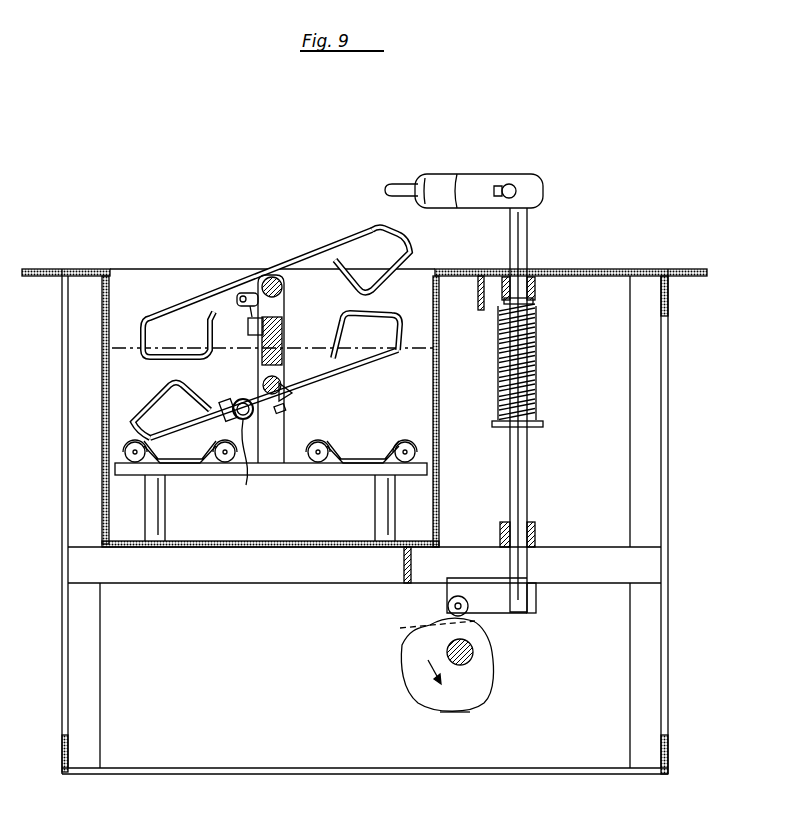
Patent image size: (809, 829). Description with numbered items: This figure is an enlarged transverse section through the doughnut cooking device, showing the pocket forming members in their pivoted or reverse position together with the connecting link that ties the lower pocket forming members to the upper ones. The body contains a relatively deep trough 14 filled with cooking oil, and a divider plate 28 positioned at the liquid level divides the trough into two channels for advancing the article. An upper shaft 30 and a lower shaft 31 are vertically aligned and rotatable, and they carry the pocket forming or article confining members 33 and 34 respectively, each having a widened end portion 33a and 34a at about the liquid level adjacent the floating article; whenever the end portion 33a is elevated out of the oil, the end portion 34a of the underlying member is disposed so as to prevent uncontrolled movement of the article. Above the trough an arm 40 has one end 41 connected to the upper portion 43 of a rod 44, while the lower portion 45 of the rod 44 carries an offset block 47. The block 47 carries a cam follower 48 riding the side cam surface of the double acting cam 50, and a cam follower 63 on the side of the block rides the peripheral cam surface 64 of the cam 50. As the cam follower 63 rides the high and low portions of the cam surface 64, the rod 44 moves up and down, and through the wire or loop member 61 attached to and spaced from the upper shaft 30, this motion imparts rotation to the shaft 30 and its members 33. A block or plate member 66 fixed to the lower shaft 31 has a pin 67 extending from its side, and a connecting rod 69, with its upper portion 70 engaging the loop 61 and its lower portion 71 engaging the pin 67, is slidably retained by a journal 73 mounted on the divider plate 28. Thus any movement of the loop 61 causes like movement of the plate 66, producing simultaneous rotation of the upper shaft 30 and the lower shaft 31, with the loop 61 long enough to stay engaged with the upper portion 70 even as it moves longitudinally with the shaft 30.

The trough 14 is at (115, 394).
The divider plate 28 is at (285, 340).
The upper shaft 30 is at (272, 277).
The lower shaft 31 is at (292, 397).
The upper pocket forming member 33 is at (302, 258).
The widened end portion of upper pocket forming member 33a is at (413, 249).
The lower pocket forming member 34 is at (330, 381).
The widened end portion of lower pocket forming member 34a is at (396, 352).
The arm 40 is at (405, 182).
The end of arm 41 is at (480, 180).
The upper portion of rod 43 is at (531, 225).
The rod 44 is at (531, 259).
The lower portion of rod 45 is at (520, 601).
The offset block 47 is at (498, 613).
The cam follower 48 is at (410, 628).
The double acting cam 50 is at (478, 686).
The loop member 61 is at (243, 293).
The cam follower 63 is at (448, 604).
The peripheral cam surface 64 is at (472, 712).
The block or plate member 66 is at (228, 405).
The pin 67 is at (243, 400).
The connecting rod 69 is at (283, 380).
The upper portion of connecting rod 70 is at (250, 308).
The lower portion of connecting rod 71 is at (256, 460).
The journal 73 is at (255, 327).